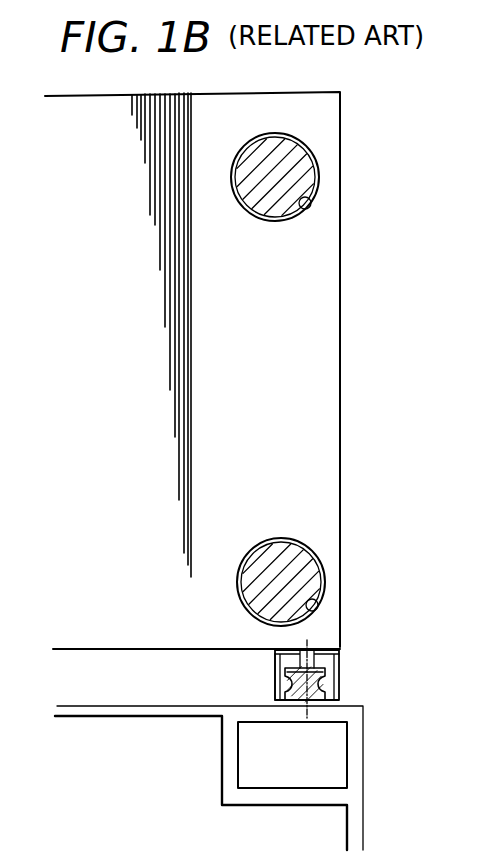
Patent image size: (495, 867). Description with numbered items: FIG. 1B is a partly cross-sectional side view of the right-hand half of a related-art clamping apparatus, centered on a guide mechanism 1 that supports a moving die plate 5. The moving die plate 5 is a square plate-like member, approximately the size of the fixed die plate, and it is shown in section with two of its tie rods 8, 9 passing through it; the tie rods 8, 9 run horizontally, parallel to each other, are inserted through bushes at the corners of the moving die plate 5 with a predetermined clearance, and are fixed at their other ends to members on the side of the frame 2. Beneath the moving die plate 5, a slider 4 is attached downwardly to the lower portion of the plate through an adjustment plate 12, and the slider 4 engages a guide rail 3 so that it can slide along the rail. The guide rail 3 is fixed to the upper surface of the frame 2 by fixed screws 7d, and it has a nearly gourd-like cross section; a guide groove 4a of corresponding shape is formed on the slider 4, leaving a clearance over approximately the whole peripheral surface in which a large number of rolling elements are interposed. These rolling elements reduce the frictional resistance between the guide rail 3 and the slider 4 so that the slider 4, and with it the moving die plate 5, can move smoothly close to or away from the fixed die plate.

The guide mechanism 1 is at (372, 673).
The frame 2 is at (353, 772).
The guide rail 3 is at (313, 688).
The slider 4 is at (335, 670).
The guide groove 4a is at (272, 675).
The moving die plate 5 is at (326, 389).
The fixed screw 7d is at (300, 710).
The tie rod 8 is at (297, 165).
The tie rod 9 is at (305, 565).
The adjustment plate 12 is at (273, 652).